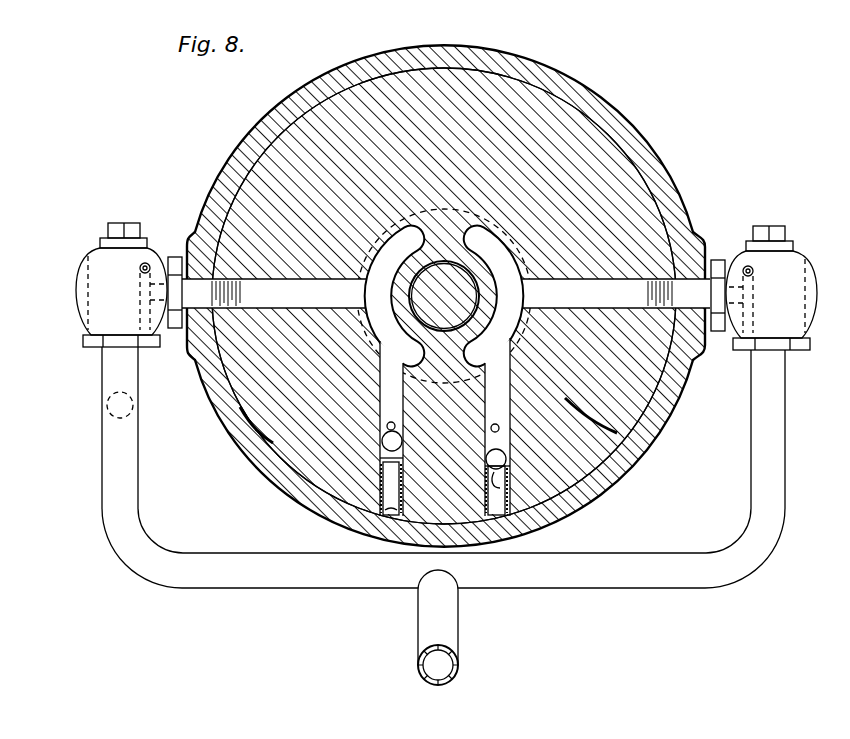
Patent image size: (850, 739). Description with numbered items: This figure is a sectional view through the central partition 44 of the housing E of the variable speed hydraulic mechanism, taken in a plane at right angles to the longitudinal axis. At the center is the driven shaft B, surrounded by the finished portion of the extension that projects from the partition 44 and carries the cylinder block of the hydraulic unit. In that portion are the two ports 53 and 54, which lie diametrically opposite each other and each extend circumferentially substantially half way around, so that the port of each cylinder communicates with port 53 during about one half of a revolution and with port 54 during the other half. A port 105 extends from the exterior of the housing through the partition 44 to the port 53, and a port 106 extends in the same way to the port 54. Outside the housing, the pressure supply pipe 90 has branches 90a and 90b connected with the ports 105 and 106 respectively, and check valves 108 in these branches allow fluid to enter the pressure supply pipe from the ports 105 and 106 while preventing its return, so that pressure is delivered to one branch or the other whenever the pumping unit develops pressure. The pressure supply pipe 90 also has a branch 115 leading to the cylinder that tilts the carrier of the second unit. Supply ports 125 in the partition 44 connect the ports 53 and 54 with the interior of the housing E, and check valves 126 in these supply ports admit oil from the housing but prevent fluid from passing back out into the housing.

The housing E is at (623, 122).
The driven shaft B is at (455, 282).
The central partition 44 is at (638, 446).
The port 53 is at (391, 296).
The port 54 is at (493, 296).
The port 105 is at (275, 293).
The port 106 is at (615, 293).
The check valve 108 is at (446, 286).
The pressure supply pipe 90 is at (138, 437).
The branch of pressure supply pipe 90a is at (127, 492).
The branch of pressure supply pipe 90b is at (778, 425).
The branch 115 is at (447, 625).
The supply port 125 is at (386, 417).
The check valve 126 is at (381, 486).